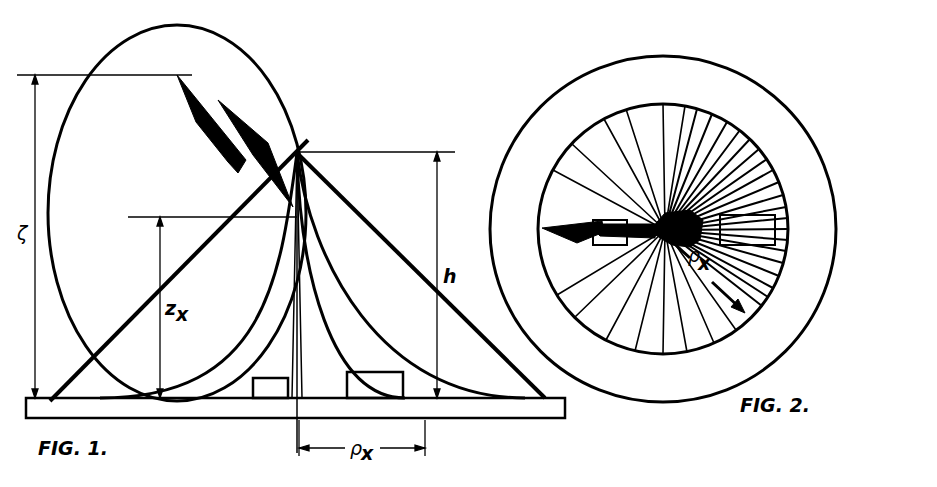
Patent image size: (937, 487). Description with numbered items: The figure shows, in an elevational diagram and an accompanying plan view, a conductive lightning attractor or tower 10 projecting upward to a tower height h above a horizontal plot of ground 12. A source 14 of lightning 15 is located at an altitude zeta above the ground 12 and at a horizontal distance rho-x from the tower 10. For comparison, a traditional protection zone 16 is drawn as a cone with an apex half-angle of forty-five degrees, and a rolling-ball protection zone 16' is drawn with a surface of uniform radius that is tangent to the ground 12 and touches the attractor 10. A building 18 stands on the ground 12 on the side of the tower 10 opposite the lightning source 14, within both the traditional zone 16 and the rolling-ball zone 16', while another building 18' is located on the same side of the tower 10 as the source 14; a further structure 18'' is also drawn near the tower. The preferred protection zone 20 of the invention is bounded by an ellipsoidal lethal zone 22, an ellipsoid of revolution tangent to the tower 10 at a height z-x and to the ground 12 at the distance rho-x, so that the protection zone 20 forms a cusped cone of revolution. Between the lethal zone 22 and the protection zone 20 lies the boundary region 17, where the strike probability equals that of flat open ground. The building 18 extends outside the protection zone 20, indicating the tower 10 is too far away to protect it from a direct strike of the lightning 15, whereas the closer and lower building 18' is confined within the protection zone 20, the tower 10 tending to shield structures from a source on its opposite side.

In FIG. 1, the conductive lightning attractor or tower 10 is at (298, 150).
In FIG. 2, the conductive lightning attractor or tower 10 is at (660, 223).
In FIG. 1, the horizontal plot of ground 12 is at (100, 391).
In FIG. 2, the horizontal plot of ground 12 is at (540, 300).
In FIG. 1, the source of lightning 14 is at (177, 75).
In FIG. 2, the source of lightning 14 is at (540, 228).
In FIG. 1, the lightning 15 is at (220, 108).
In FIG. 2, the lightning 15 is at (597, 220).
In FIG. 1, the traditional protection zone 16 is at (421, 275).
In FIG. 1, the rolling-ball protection zone 16' is at (411, 275).
In FIG. 1, the boundary region 17 is at (250, 357).
In FIG. 1, the building 18 is at (351, 275).
In FIG. 2, the building 18' is at (747, 230).
In FIG. 1, the element 18'' is at (281, 375).
In FIG. 2, the element 18'' is at (594, 246).
In FIG. 1, the preferred protection zone 20 is at (330, 388).
In FIG. 1, the ellipsoidal lethal zone 22 is at (168, 175).